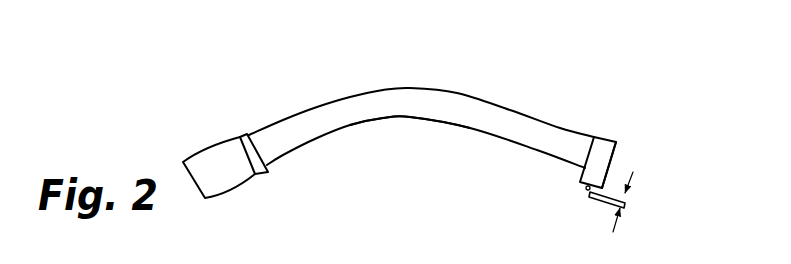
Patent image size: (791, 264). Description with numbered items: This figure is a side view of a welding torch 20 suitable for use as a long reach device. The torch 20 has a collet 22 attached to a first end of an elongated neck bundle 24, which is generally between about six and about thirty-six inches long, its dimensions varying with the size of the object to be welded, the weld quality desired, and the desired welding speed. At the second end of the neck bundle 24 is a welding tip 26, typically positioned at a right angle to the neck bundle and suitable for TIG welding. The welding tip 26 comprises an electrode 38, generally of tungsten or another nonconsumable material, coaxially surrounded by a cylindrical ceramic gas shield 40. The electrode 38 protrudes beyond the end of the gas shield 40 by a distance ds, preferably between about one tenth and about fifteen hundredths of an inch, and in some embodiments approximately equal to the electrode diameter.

The welding torch 20 is at (458, 82).
The collet 22 is at (233, 185).
The neck bundle 24 is at (402, 121).
The welding tip 26 is at (611, 130).
The electrode 38 is at (583, 188).
The gas shield 40 is at (614, 156).
The distance ds is at (628, 199).